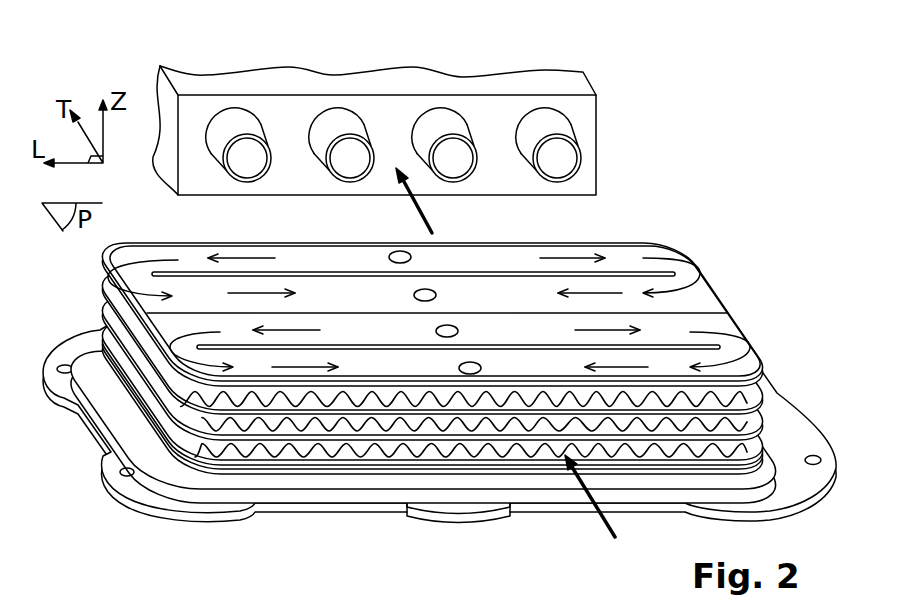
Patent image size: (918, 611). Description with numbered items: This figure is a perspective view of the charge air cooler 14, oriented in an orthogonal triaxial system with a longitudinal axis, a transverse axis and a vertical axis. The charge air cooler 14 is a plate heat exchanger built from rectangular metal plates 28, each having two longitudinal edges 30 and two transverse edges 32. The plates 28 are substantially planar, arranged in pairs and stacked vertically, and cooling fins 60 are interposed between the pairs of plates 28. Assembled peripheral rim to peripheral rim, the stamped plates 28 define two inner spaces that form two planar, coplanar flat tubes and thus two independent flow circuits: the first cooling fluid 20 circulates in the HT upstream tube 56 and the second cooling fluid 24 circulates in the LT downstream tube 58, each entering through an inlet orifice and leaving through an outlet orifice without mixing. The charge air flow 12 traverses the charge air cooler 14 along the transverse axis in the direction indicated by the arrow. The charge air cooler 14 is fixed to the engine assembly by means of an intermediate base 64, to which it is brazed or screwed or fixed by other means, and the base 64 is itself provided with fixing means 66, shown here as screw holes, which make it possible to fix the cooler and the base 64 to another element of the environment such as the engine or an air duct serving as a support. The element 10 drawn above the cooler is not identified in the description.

The battery module 10 is at (228, 88).
The charge air flow 12 is at (490, 222).
The charge air cooler 14 is at (139, 225).
The first cooling fluid 20 is at (745, 356).
The second cooling fluid 24 is at (700, 281).
The rectangular metal plates 28 is at (776, 375).
The longitudinal edges 30 is at (640, 242).
The transverse edges 32 is at (122, 295).
The HT upstream tube 56 is at (222, 332).
The LT downstream tube 58 is at (125, 263).
The cooling fins 60 is at (243, 443).
The intermediate base 64 is at (163, 494).
The fixing means 66 is at (127, 474).